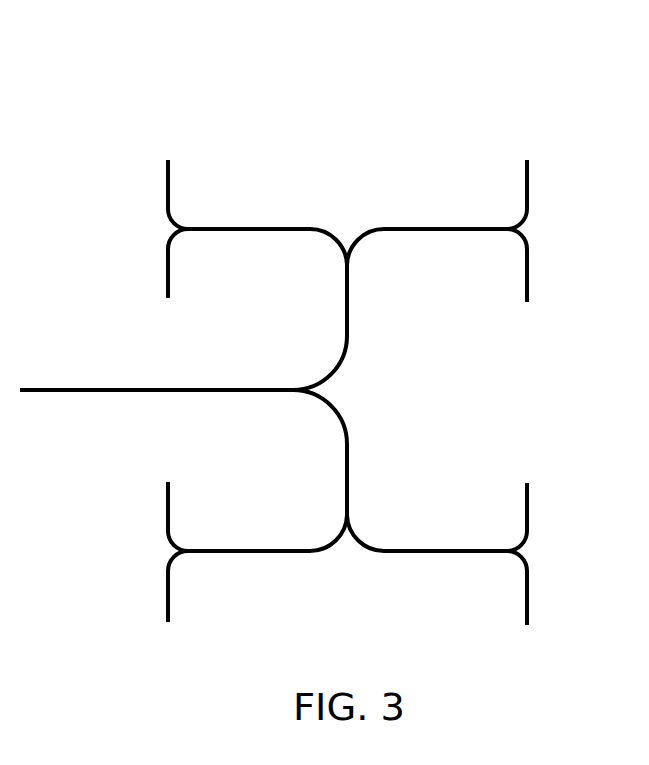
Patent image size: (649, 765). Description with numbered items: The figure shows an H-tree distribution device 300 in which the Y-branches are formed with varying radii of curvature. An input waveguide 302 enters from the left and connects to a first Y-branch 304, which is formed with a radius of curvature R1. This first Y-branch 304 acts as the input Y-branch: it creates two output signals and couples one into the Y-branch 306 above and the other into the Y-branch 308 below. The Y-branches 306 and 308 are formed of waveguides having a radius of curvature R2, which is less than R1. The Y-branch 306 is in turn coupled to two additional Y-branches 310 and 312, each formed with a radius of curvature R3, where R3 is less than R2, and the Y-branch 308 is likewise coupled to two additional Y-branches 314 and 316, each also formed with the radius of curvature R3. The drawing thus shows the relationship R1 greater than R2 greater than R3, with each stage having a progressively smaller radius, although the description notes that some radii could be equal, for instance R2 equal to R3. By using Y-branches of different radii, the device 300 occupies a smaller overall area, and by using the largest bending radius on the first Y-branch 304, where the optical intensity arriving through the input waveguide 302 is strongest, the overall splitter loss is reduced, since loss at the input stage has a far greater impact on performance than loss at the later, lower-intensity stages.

The H-tree distribution device 300 is at (413, 100).
The input waveguide 302 is at (57, 393).
The first Y-branch 304 is at (330, 390).
The Y-branch 306 is at (348, 230).
The Y-branch 308 is at (347, 556).
The Y-branch 310 is at (158, 229).
The Y-branch 312 is at (535, 228).
The Y-branch 314 is at (158, 551).
The Y-branch 316 is at (532, 545).
The radius of curvature R1 is at (320, 370).
The radius of curvature R2 is at (327, 242).
The radius of curvature R3 is at (182, 212).